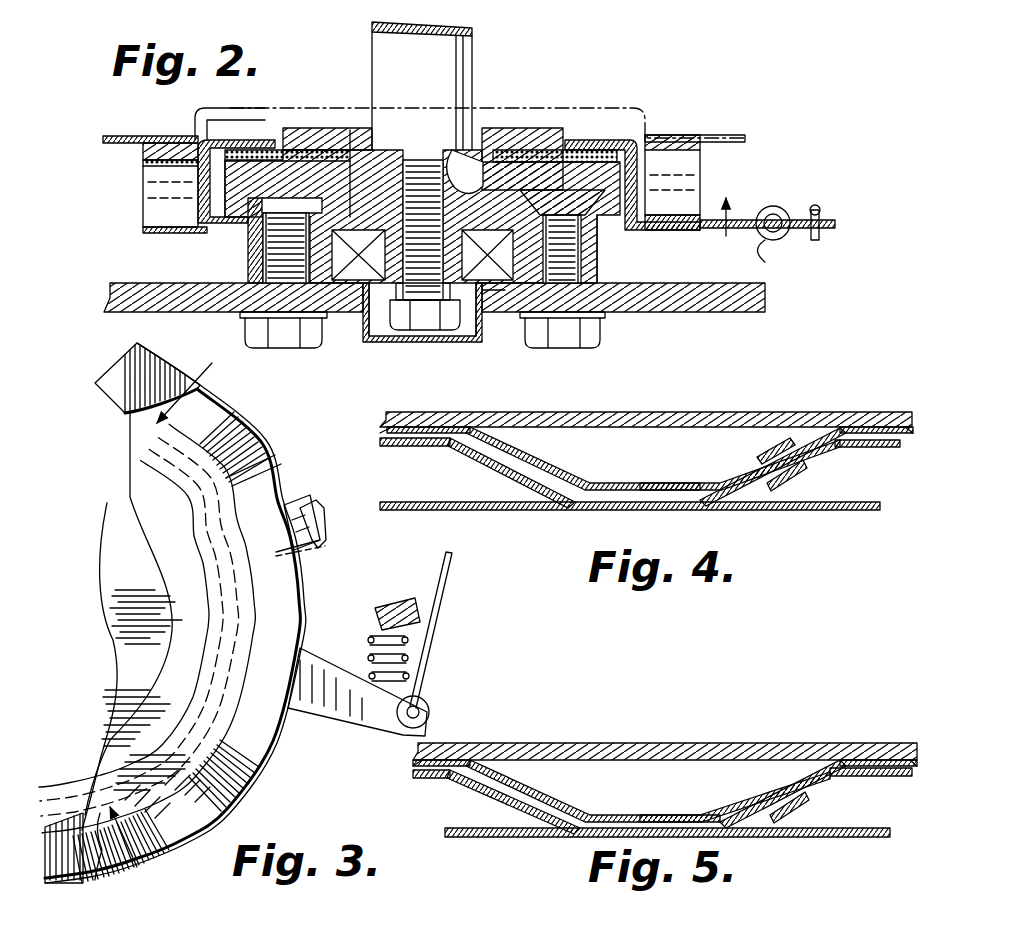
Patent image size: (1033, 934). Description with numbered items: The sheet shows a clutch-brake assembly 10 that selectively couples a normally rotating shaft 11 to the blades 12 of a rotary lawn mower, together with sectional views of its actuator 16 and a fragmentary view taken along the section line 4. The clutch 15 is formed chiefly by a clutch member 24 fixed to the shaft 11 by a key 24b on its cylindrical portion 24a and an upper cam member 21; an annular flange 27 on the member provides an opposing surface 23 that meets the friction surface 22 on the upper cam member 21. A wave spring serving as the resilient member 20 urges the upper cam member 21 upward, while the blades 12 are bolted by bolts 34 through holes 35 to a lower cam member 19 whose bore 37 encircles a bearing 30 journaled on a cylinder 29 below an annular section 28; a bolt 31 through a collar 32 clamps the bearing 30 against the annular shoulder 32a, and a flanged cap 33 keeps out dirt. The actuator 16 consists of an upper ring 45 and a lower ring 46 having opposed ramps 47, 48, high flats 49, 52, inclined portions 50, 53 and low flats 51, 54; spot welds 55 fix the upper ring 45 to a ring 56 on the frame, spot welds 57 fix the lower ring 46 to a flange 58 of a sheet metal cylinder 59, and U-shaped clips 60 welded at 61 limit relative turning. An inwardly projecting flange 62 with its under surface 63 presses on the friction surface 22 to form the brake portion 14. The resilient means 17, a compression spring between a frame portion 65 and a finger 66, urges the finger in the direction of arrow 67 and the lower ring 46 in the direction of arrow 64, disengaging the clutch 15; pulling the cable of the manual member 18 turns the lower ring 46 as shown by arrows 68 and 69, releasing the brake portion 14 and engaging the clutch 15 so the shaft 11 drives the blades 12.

In FIG. 2, the clutch-brake assembly 10 is at (752, 75).
In FIG. 2, the shaft 11 is at (473, 40).
In FIG. 2, the blades 12 is at (128, 283).
In FIG. 2, the brake portion 14 is at (652, 135).
In FIG. 2, the clutch 15 is at (572, 150).
In FIG. 2, the actuator 16 is at (712, 175).
In FIG. 3, the actuator 16 is at (278, 760).
In FIG. 4, the actuator 16 is at (792, 405).
In FIG. 5, the actuator 16 is at (728, 740).
In FIG. 2, the resilient means 17 is at (785, 208).
In FIG. 3, the resilient means 17 is at (410, 636).
In FIG. 2, the manual member 18 is at (820, 212).
In FIG. 3, the manual member 18 is at (448, 590).
In FIG. 2, the lower cam member 19 is at (600, 245).
In FIG. 2, the resilient member 20 is at (255, 220).
In FIG. 2, the upper cam member 21 is at (230, 190).
In FIG. 2, the friction surface 22 is at (295, 128).
In FIG. 2, the opposing surface 23 is at (352, 130).
In FIG. 2, the clutch member 24 is at (500, 128).
In FIG. 2, the cylindrical portion 24a is at (385, 150).
In FIG. 2, the key 24b is at (462, 150).
In FIG. 2, the annular flange 27 is at (540, 150).
In FIG. 3, the annular flange 27 is at (118, 575).
In FIG. 2, the annular section 28 is at (295, 245).
In FIG. 2, the cylinder 29 is at (423, 230).
In FIG. 2, the bearing 30 is at (372, 262).
In FIG. 2, the bolt 31 is at (425, 330).
In FIG. 2, the collar 32 is at (478, 336).
In FIG. 2, the annular shoulder 32a is at (365, 300).
In FIG. 2, the flanged cap 33 is at (440, 336).
In FIG. 2, the bolts 34 is at (285, 348).
In FIG. 2, the holes 35 is at (575, 305).
In FIG. 2, the bore 37 is at (485, 290).
In FIG. 3, the section line 4- 4 is at (164, 626).
In FIG. 3, the upper ring 45 is at (178, 440).
In FIG. 4, the upper ring 45 is at (522, 450).
In FIG. 5, the upper ring 45 is at (528, 784).
In FIG. 3, the lower ring 46 is at (122, 398).
In FIG. 4, the lower ring 46 is at (478, 468).
In FIG. 5, the lower ring 46 is at (495, 788).
In FIG. 3, the ramps 47 is at (275, 480).
In FIG. 4, the ramps 47 is at (735, 478).
In FIG. 5, the ramps 47 is at (766, 803).
In FIG. 4, the ramps 48 is at (725, 500).
In FIG. 5, the ramps 48 is at (750, 830).
In FIG. 2, the high flats 49 is at (150, 136).
In FIG. 3, the high flats 49 is at (225, 420).
In FIG. 4, the high flats 49 is at (395, 433).
In FIG. 5, the high flats 49 is at (460, 745).
In FIG. 3, the downwardly inclined portions 50 is at (212, 795).
In FIG. 4, the downwardly inclined portions 50 is at (560, 480).
In FIG. 5, the downwardly inclined portions 50 is at (570, 812).
In FIG. 3, the low flats 51 is at (268, 700).
In FIG. 4, the low flats 51 is at (662, 483).
In FIG. 5, the low flats 51 is at (652, 815).
In FIG. 2, the high flats 52 is at (150, 172).
In FIG. 3, the high flats 52 is at (128, 368).
In FIG. 4, the high flats 52 is at (412, 446).
In FIG. 5, the high flats 52 is at (440, 778).
In FIG. 4, the downwardly inclined portions 53 is at (535, 480).
In FIG. 5, the downwardly inclined portions 53 is at (545, 806).
In FIG. 4, the low flats 54 is at (590, 505).
In FIG. 5, the low flats 54 is at (700, 815).
In FIG. 2, the spot welds 55 is at (672, 150).
In FIG. 4, the spot welds 55 is at (398, 427).
In FIG. 5, the spot welds 55 is at (908, 760).
In FIG. 2, the ring 56 is at (700, 138).
In FIG. 4, the ring 56 is at (722, 412).
In FIG. 5, the ring 56 is at (625, 743).
In FIG. 4, the spot welds 57 is at (636, 502).
In FIG. 2, the flange 58 is at (685, 230).
In FIG. 4, the flange 58 is at (505, 510).
In FIG. 5, the flange 58 is at (820, 837).
In FIG. 2, the sheet metal cylinder 59 is at (200, 145).
In FIG. 3, the sheet metal cylinder 59 is at (232, 622).
In FIG. 3, the U-shaped clips 60 is at (312, 518).
In FIG. 4, the U-shaped clips 60 is at (800, 470).
In FIG. 5, the U-shaped clips 60 is at (802, 800).
In FIG. 3, the spot welds 61 is at (314, 540).
In FIG. 4, the spot welds 61 is at (780, 452).
In FIG. 2, the inwardly projecting flange 62 is at (222, 140).
In FIG. 3, the inwardly projecting flange 62 is at (125, 700).
In FIG. 2, the under surface 63 is at (262, 150).
In FIG. 4, the arrow 64 is at (805, 522).
In FIG. 3, the frame portion 65 is at (400, 600).
In FIG. 2, the finger 66 is at (776, 256).
In FIG. 3, the finger 66 is at (340, 720).
In FIG. 3, the arrow 67 is at (340, 650).
In FIG. 3, the arrow 68 is at (455, 680).
In FIG. 5, the arrow 69 is at (505, 844).